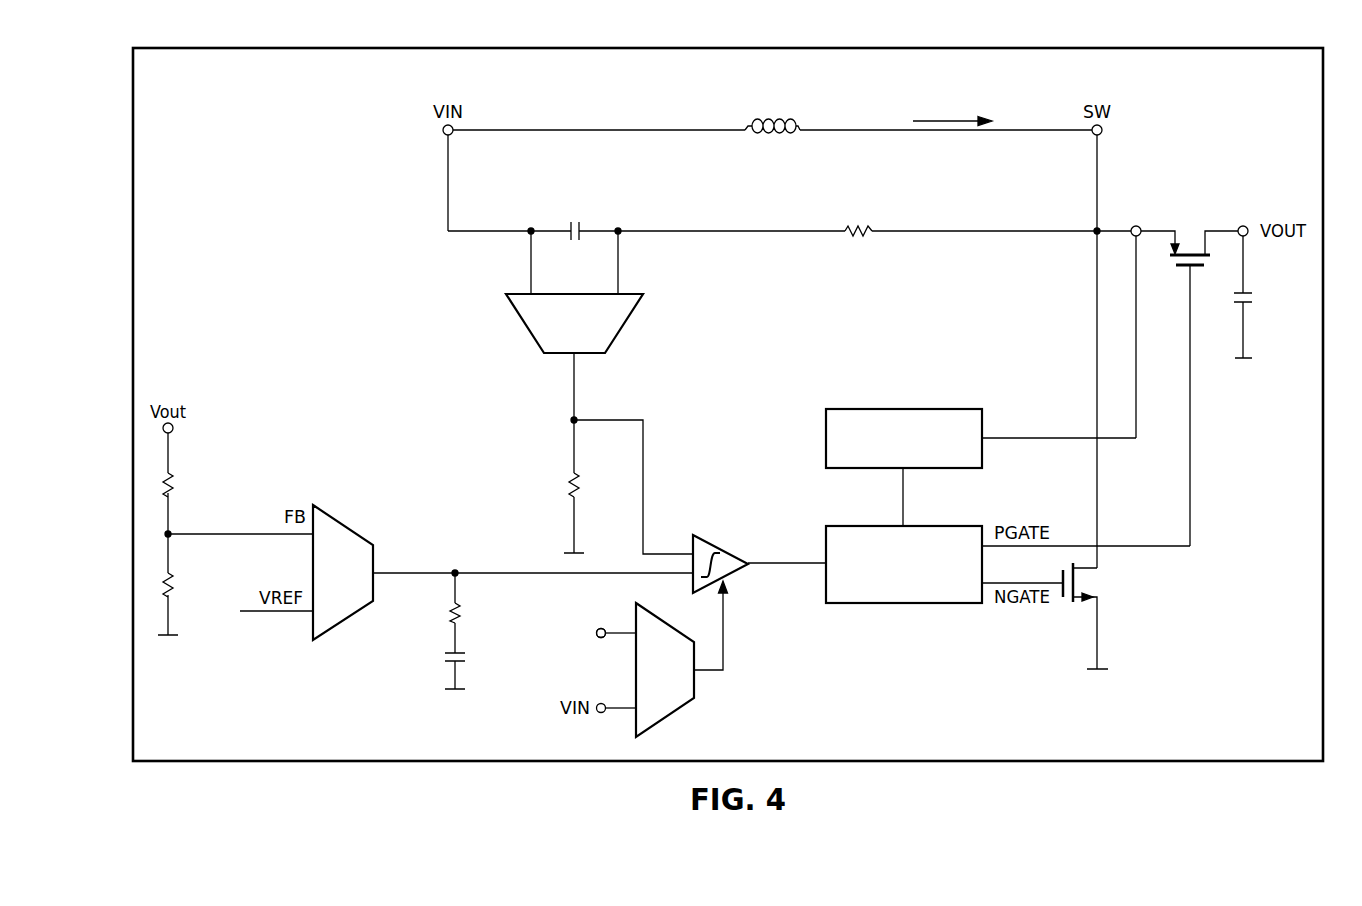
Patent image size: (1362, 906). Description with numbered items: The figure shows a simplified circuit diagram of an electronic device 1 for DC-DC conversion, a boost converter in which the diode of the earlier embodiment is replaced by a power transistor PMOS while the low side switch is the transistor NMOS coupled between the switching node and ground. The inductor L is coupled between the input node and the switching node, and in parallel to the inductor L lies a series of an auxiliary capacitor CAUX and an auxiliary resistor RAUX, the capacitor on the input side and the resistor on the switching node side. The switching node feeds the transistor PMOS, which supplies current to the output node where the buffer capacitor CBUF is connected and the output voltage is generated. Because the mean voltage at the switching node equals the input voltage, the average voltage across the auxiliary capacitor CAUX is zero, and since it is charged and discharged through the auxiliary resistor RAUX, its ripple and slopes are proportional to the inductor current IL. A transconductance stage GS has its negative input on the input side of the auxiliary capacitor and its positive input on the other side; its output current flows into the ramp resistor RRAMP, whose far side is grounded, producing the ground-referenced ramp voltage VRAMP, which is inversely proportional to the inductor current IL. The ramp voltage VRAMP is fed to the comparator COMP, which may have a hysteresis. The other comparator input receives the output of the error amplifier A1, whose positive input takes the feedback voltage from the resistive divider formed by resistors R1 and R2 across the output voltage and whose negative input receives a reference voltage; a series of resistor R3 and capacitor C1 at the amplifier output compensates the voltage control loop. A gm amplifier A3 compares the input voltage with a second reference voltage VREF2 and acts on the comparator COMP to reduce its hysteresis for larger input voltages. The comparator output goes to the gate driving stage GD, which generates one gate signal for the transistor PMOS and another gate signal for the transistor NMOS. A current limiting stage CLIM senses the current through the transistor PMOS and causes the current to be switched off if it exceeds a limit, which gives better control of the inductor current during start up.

The electronic device 1 is at (1327, 183).
The inductor L is at (772, 117).
The inductor current IL is at (952, 111).
The auxiliary capacitor CAUX is at (574, 219).
The auxiliary resistor RAUX is at (857, 218).
The power transistor PMOS is at (1189, 233).
The buffer capacitor CBUF is at (1271, 297).
The transconductance stage GS is at (583, 323).
The ramp voltage VRAMP is at (642, 487).
The ramp resistor RRAMP is at (545, 513).
The resistor R1 is at (181, 485).
The resistor R2 is at (181, 585).
The error amplifier A1 is at (343, 553).
The resistor R3 is at (468, 613).
The capacitor C1 is at (468, 669).
The comparator COMP is at (720, 552).
The gm amplifier A3 is at (682, 665).
The second reference voltage VREF2 is at (570, 633).
The current limiting stage CLIM is at (904, 438).
The gate driving stage GD is at (904, 580).
The low side transistor NMOS is at (1110, 616).